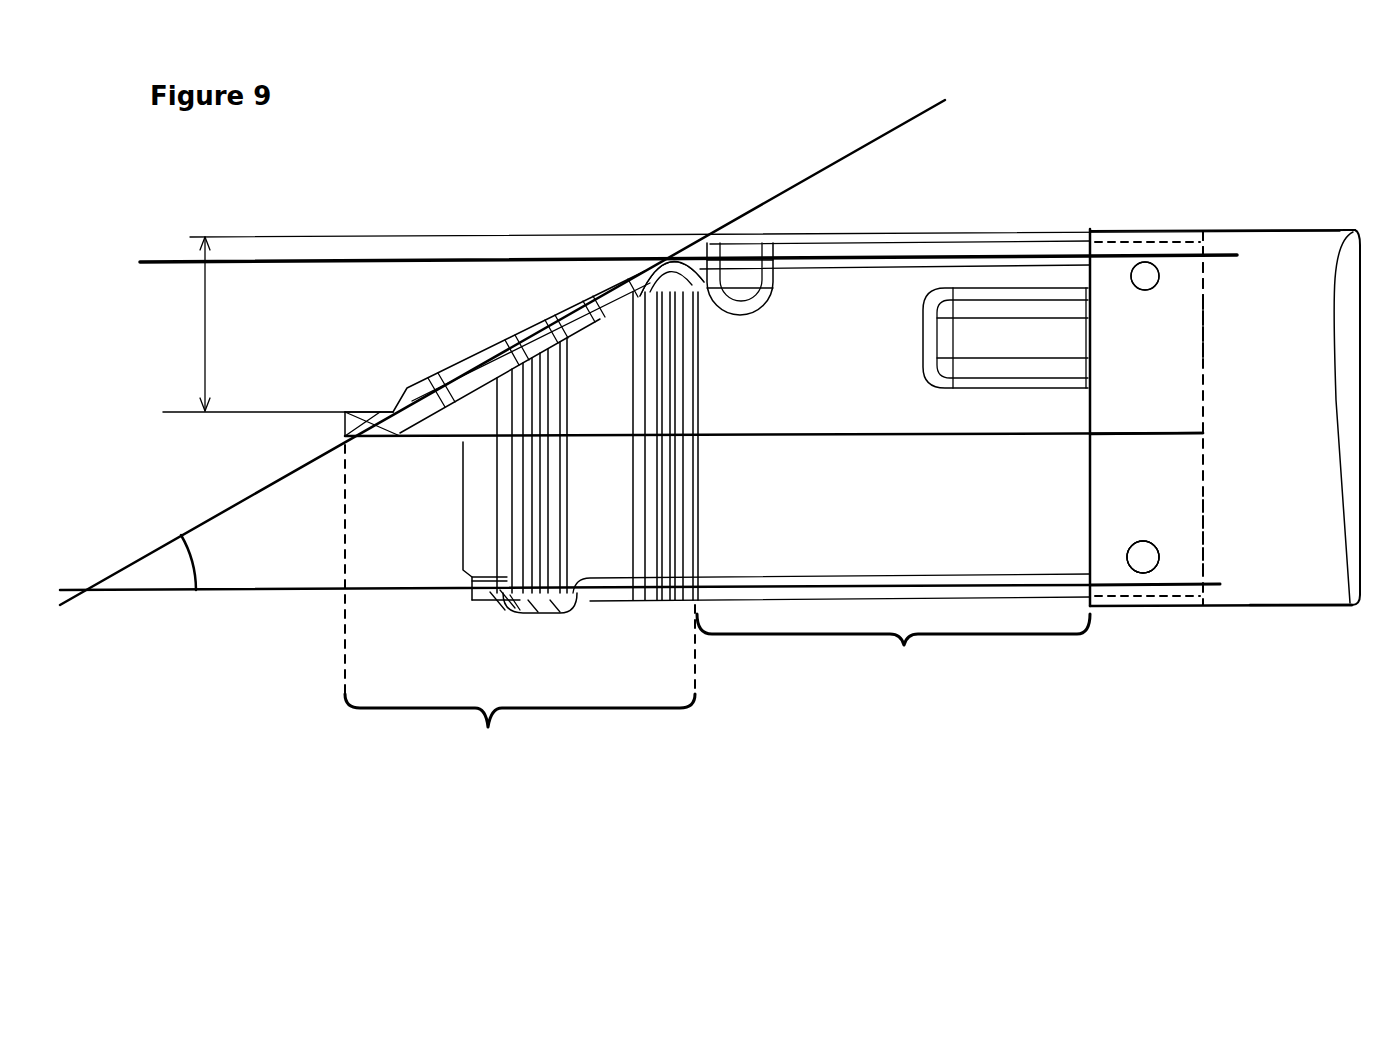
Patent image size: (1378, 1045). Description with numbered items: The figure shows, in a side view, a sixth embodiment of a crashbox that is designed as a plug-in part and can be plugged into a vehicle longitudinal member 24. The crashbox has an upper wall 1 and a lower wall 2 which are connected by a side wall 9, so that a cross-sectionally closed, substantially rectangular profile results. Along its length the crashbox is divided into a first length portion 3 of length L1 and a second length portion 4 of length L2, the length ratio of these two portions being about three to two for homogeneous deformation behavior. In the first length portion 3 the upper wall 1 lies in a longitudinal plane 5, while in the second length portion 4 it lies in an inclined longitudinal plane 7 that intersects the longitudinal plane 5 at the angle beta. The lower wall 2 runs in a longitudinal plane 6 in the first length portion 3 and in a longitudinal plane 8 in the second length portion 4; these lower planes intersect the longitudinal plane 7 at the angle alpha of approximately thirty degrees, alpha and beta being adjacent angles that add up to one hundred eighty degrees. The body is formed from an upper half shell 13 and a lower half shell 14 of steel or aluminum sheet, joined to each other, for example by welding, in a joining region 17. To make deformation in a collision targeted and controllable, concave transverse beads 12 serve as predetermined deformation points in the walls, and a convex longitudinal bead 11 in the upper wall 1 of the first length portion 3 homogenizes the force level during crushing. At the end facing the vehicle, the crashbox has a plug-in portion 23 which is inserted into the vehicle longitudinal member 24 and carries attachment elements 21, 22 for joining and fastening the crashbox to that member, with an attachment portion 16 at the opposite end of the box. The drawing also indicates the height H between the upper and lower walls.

The upper wall 1 is at (482, 338).
The lower wall 2 is at (510, 607).
The first length portion 3 is at (1090, 614).
The second length portion 4 is at (695, 694).
The longitudinal plane 5 is at (1128, 256).
The longitudinal plane 6 is at (1137, 585).
The longitudinal plane 7 is at (843, 157).
The longitudinal plane 8 is at (1143, 557).
The side wall 9 is at (960, 418).
The longitudinal bead 11 is at (933, 368).
The transverse bead 12 is at (745, 297).
The half shell 13 is at (1240, 343).
The half shell 14 is at (1245, 552).
The attachment portion 16 is at (363, 407).
The joining region 17 is at (987, 440).
The attachment element 21 is at (1147, 278).
The attachment element 22 is at (1160, 563).
The plug-in portion 23 is at (1203, 283).
The vehicle longitudinal member 24 is at (1297, 593).
The height H is at (186, 324).
The length of the first length portion L1 is at (893, 629).
The length of the second length portion L2 is at (520, 710).